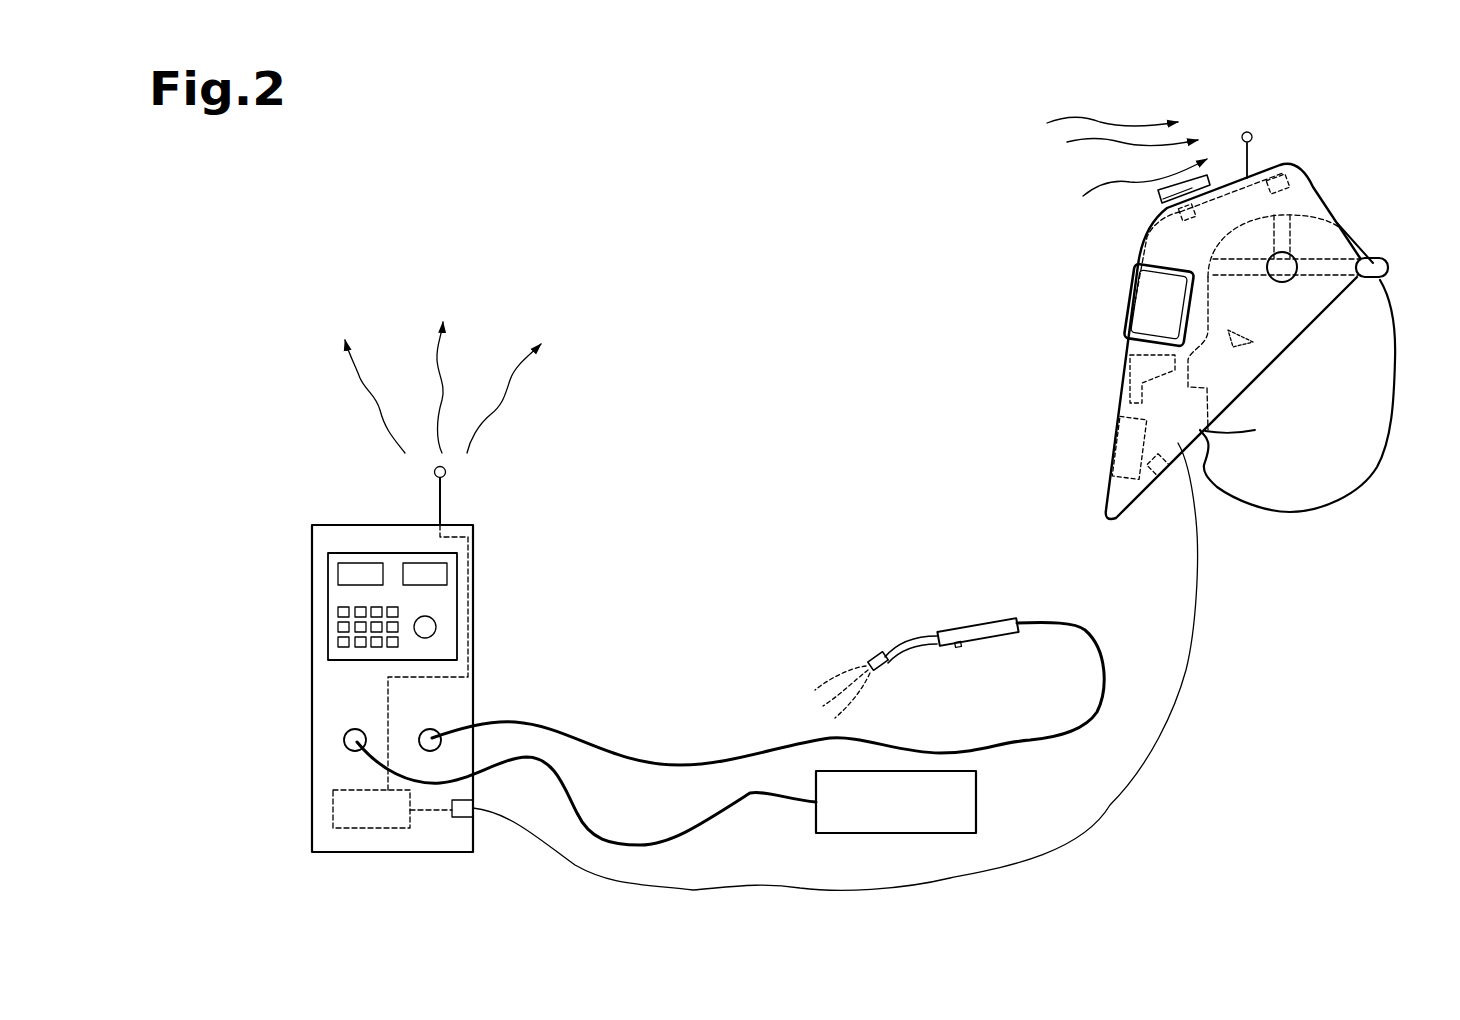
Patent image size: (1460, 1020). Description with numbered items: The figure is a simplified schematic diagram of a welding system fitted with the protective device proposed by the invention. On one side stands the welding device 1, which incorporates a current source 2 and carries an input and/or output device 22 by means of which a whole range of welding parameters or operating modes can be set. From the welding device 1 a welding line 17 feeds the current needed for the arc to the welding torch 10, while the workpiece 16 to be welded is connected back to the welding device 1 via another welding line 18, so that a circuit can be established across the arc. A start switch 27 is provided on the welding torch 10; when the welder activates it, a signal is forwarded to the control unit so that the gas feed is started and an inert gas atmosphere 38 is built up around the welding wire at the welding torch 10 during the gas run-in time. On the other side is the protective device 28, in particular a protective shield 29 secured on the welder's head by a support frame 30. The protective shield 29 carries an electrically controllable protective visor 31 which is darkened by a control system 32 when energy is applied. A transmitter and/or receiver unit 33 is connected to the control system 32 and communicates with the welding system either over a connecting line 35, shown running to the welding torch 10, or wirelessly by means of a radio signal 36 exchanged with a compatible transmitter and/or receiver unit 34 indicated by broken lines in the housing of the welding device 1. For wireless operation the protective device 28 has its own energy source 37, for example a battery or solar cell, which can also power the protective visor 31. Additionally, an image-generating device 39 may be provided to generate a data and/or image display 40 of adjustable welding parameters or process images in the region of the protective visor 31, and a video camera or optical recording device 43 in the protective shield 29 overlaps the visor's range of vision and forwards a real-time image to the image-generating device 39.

The welding device 1 is at (243, 344).
The current source 2 is at (243, 590).
The welding torch 10 is at (912, 541).
The workpiece 16 is at (900, 803).
The welding line 17 is at (574, 733).
The welding line 18 is at (641, 845).
The input and/or output device 22 is at (425, 602).
The start switch 27 is at (959, 647).
The protective device 28 is at (1362, 168).
The protective shield 29 is at (1205, 484).
The support frame 30 is at (1373, 263).
The protective visor 31 is at (1133, 302).
The control system 32 is at (1125, 450).
The transmitter and/or receiver unit 33 is at (1165, 208).
The transmitter and/or receiver unit 34 is at (333, 812).
The connecting line 35 is at (1172, 725).
The radio signal 36 is at (494, 299).
The energy source 37 is at (1288, 165).
The inert gas atmosphere 38 is at (840, 646).
The image-generating device 39 is at (1106, 362).
The data and/or image display 40 is at (1130, 385).
The optical recording device 43 is at (1158, 197).